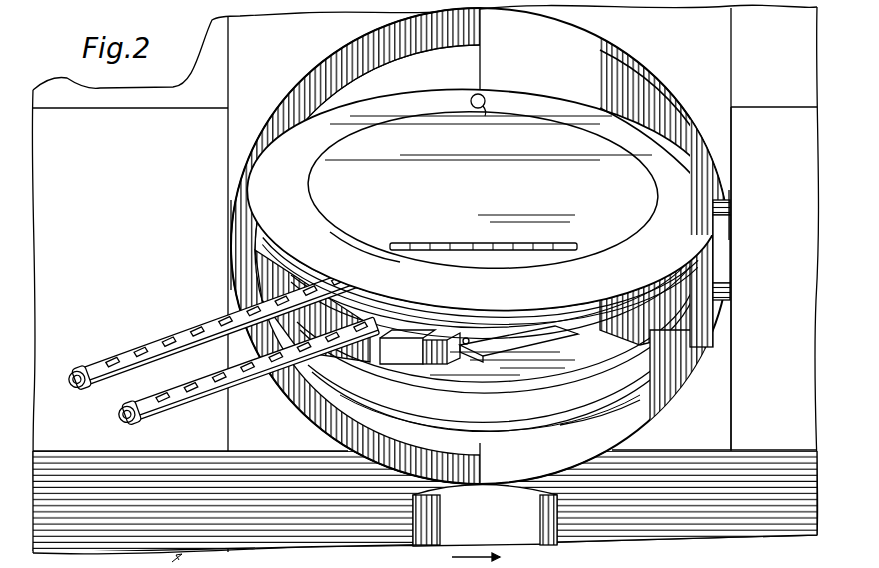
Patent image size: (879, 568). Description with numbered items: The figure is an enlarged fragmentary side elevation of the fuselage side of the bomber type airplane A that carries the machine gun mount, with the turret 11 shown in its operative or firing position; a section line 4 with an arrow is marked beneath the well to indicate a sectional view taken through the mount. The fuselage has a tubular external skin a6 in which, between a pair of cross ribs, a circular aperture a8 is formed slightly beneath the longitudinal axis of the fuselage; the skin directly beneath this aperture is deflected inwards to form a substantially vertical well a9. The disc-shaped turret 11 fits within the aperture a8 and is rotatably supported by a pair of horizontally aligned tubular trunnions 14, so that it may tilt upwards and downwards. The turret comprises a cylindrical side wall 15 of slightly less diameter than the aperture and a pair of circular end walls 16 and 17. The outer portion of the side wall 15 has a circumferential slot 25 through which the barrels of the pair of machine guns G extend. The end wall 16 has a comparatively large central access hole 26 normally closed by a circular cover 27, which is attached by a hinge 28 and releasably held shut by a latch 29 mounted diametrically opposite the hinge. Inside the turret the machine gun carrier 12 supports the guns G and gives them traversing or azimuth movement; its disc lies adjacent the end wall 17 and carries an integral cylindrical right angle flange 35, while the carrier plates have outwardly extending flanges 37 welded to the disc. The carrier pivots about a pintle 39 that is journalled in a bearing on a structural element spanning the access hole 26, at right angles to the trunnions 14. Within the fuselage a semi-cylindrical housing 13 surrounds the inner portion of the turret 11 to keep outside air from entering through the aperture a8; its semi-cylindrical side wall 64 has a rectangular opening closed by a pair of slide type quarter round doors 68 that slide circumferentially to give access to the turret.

The slide type quarter round doors 68 is at (562, 40).
The housing 13 is at (618, 60).
The turret 11 is at (533, 91).
The end wall 16 is at (648, 131).
The latch 29 is at (487, 114).
The circular cover 27 is at (483, 189).
The access hole 26 is at (357, 238).
The hinge 28 is at (523, 246).
The tubular trunnions 14 is at (724, 262).
The cylindrical side wall 15 is at (700, 305).
The cylindrical right angle flange 35 is at (537, 344).
The machine gun carrier 12 is at (542, 343).
The circumferential slot 25 is at (500, 402).
The end wall 17 is at (613, 410).
The semi-cylindrical side wall 64 is at (676, 423).
The flanges 37 is at (376, 365).
The pintle 39 is at (350, 365).
The machine guns G is at (162, 379).
The circular aperture a8 is at (235, 212).
The external skin a6 is at (756, 278).
The well a9 is at (485, 514).
The section line 4 is at (336, 555).
The airplane A is at (425, 287).